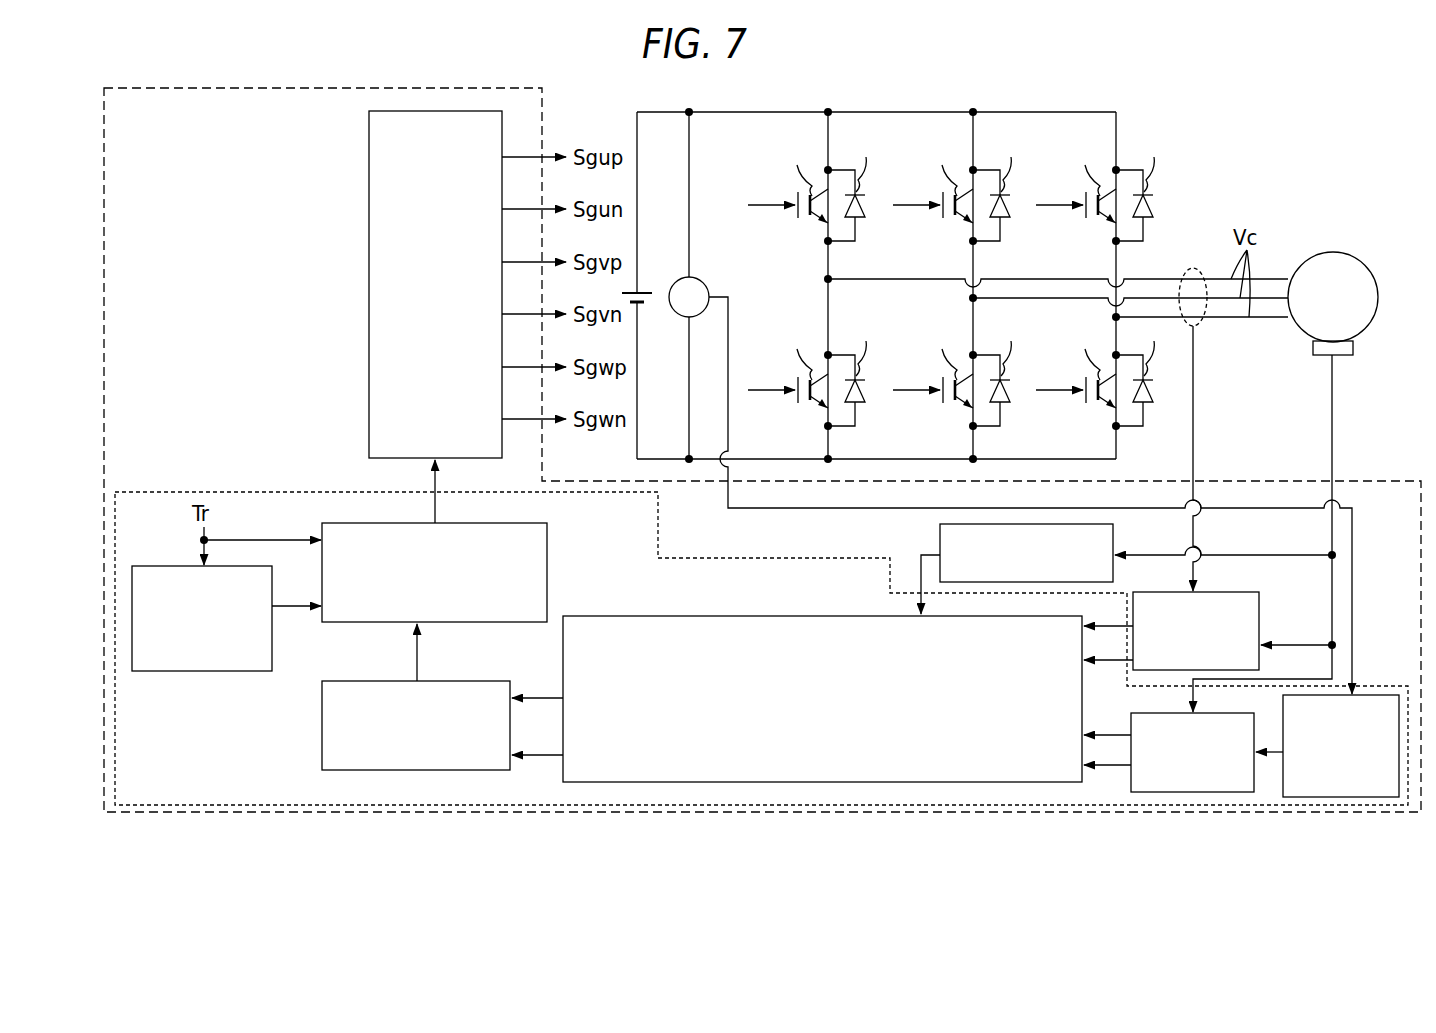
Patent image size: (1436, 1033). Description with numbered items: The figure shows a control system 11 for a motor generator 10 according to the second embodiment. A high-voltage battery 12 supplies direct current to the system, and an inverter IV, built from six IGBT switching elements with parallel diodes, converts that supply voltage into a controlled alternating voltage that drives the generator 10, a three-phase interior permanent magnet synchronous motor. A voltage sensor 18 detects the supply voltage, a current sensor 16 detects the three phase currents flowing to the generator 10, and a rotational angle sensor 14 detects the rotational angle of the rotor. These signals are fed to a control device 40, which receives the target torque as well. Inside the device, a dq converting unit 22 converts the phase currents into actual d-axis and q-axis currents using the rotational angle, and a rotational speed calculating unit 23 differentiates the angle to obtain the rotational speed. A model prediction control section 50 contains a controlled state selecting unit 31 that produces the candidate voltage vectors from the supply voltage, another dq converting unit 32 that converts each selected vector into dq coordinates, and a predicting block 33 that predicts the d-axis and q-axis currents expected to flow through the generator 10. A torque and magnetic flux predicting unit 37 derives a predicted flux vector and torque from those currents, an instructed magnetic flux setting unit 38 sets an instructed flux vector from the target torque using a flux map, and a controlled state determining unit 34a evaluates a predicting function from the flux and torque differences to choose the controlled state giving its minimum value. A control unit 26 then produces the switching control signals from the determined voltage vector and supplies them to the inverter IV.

The control device 40 is at (182, 88).
The control unit 26 is at (369, 295).
The control system 11 is at (924, 91).
The inverter IV is at (1154, 104).
The high-voltage battery 12 is at (645, 292).
The voltage sensor 18 is at (707, 286).
The current sensor 16 is at (1193, 268).
The motor generator 10 is at (1333, 252).
The rotational angle sensor 14 is at (1313, 348).
The model prediction control section 50 is at (707, 558).
The controlled state determining unit 34a is at (547, 540).
The instructed magnetic flux setting unit 38 is at (203, 671).
The torque and magnetic flux predicting unit 37 is at (322, 730).
The predicting block 33 is at (563, 648).
The rotational speed calculating unit 23 is at (940, 540).
The dq converting unit 22 is at (1259, 612).
The dq converting unit 32 is at (1152, 713).
The controlled state selecting unit 31 is at (1383, 695).